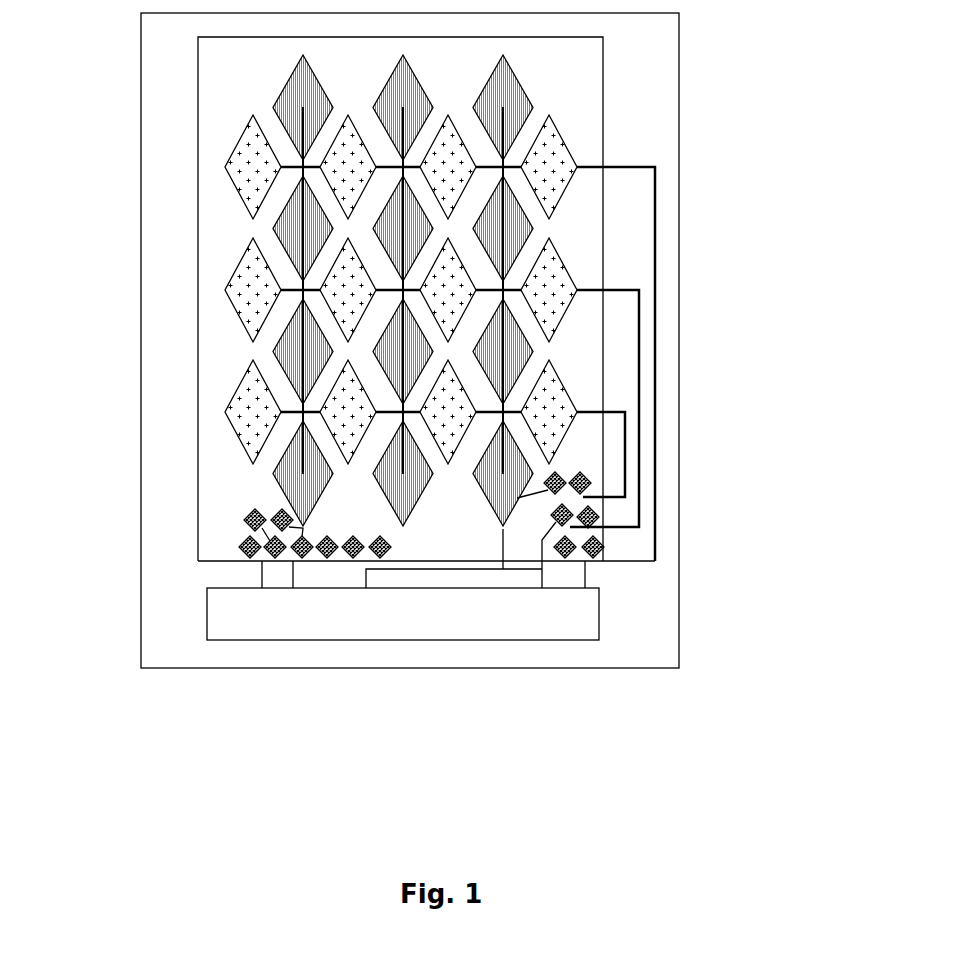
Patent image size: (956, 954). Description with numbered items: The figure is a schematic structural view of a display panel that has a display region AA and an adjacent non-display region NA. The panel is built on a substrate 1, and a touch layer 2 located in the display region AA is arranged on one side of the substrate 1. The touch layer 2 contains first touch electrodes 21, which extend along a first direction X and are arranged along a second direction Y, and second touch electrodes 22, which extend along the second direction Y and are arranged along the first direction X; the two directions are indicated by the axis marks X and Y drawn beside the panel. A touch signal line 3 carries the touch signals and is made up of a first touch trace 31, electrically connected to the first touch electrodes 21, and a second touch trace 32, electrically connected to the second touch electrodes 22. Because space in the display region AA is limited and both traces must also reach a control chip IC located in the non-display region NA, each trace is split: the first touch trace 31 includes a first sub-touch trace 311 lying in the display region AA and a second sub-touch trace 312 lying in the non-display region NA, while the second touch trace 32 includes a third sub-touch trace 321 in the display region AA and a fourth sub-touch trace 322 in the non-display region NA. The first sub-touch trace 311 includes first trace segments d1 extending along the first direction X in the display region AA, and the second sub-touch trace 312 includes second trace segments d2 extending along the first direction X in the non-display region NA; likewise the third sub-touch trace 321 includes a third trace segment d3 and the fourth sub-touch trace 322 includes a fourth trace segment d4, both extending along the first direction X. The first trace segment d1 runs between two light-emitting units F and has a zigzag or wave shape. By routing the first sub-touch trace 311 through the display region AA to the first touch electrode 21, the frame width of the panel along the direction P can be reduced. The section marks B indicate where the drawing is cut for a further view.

The substrate 1 is at (652, 60).
The touch layer 2 is at (501, 308).
The first touch electrode 21 is at (545, 168).
The second touch electrode 22 is at (502, 230).
The touch signal line 3 is at (444, 664).
The first touch trace 31 is at (558, 647).
The first sub-touch trace 311 is at (567, 558).
The second sub-touch trace 312 is at (627, 527).
The second touch trace 32 is at (402, 648).
The third sub-touch trace 321 is at (323, 552).
The fourth sub-touch trace 322 is at (450, 570).
The display region AA is at (222, 88).
The non-display region NA is at (168, 138).
The control chip IC is at (252, 620).
The light-emitting unit F is at (240, 543).
The direction P is at (613, 520).
The section line B- B is at (382, 523).
The first trace segment d1 is at (598, 515).
The second trace segment d2 is at (603, 545).
The third trace segment d3 is at (253, 510).
The fourth trace segment d4 is at (475, 565).
The first direction X is at (680, 702).
The second direction Y is at (755, 783).